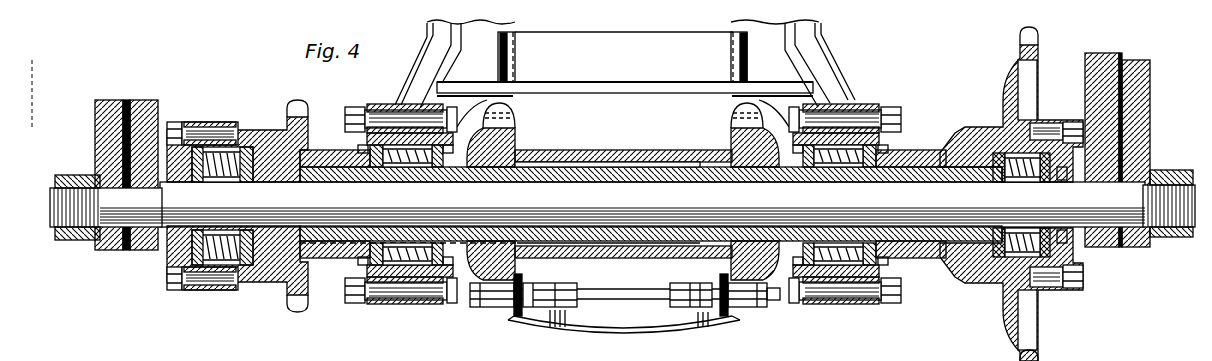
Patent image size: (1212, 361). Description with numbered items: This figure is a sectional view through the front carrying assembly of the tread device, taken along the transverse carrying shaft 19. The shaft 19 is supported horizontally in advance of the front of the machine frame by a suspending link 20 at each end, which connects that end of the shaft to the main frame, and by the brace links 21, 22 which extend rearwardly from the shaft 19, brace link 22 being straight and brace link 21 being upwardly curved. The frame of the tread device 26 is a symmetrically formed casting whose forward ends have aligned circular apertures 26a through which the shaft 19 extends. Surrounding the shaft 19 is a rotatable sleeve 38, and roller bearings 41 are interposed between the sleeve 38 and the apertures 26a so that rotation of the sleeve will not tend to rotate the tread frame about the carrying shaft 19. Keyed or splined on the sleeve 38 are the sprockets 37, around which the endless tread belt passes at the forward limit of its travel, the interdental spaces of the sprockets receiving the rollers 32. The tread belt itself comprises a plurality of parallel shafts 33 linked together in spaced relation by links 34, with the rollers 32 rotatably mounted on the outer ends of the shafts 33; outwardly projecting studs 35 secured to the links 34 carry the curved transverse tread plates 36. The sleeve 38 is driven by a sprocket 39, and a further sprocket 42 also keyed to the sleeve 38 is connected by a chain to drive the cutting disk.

The transverse carrying shaft 19 is at (622, 205).
The suspending link 20 is at (106, 100).
The brace link 21 is at (158, 107).
The brace link 22 is at (1097, 65).
The frame of the tread device 26 is at (655, 90).
The aligned circular apertures 26a is at (386, 106).
The rollers 32 is at (498, 308).
The parallel shafts 33 is at (628, 284).
The links 34 is at (558, 290).
The studs 35 is at (566, 316).
The curved transverse tread plates 36 is at (628, 334).
The sprockets 37 is at (516, 132).
The sleeve 38 is at (620, 165).
The sprocket 39 is at (1005, 342).
The roller bearings 41 is at (410, 168).
The sprocket 42 is at (283, 286).